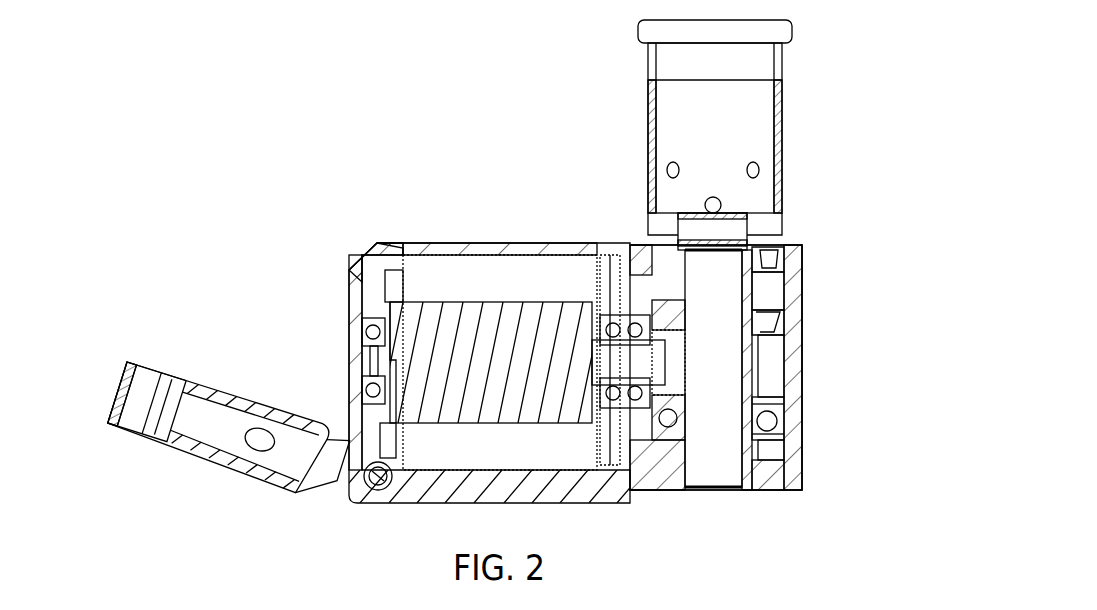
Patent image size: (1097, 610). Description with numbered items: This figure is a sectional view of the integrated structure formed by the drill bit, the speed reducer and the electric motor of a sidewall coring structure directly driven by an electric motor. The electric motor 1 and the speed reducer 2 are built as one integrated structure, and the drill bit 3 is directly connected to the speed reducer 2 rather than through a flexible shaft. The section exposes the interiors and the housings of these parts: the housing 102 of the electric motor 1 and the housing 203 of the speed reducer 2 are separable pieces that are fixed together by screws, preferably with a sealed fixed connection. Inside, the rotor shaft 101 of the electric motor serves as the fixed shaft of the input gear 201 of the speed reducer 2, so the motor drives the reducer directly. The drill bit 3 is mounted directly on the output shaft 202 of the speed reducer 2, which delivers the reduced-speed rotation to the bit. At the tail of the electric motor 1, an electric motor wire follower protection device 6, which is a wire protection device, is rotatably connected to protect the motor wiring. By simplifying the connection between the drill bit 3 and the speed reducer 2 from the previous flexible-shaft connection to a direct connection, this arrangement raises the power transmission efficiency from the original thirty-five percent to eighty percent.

The electric motor 1 is at (350, 220).
The rotor shaft 101 is at (495, 337).
The housing 102 is at (362, 314).
The speed reducer 2 is at (842, 303).
The input gear 201 is at (655, 345).
The output shaft 202 is at (757, 378).
The housing 203 is at (790, 412).
The drill bit 3 is at (778, 167).
The electric motor wire follower protection device 6 is at (262, 398).